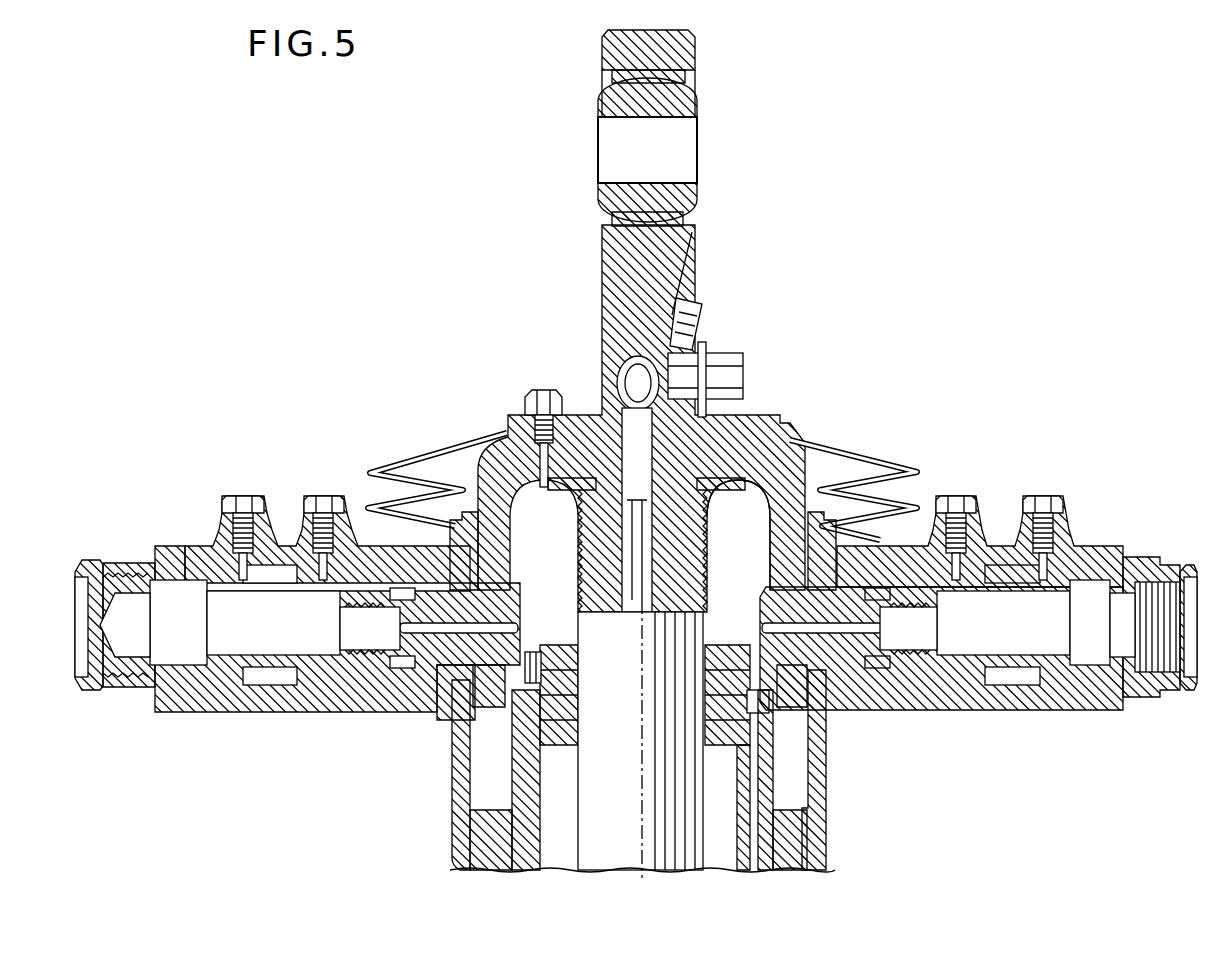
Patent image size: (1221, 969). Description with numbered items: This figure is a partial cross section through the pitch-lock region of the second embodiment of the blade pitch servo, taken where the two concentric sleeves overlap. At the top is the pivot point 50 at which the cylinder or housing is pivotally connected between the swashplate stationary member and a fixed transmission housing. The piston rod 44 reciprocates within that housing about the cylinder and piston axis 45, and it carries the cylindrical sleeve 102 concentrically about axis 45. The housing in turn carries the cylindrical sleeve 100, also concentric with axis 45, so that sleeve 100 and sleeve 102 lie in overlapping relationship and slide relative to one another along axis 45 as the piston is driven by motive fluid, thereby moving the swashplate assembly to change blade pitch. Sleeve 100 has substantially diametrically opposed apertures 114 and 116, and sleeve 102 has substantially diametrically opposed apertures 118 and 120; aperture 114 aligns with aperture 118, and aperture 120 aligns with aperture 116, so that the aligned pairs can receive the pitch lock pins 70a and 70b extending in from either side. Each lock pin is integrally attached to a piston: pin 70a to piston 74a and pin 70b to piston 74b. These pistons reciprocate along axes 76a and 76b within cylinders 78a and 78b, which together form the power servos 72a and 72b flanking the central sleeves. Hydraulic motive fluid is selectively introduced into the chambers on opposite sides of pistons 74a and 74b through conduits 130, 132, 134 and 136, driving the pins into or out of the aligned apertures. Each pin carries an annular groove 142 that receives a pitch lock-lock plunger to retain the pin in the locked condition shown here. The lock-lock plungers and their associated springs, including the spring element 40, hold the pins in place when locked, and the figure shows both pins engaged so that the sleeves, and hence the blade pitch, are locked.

The pivot point 50 is at (702, 96).
The spring 40 is at (868, 438).
The cylindrical sleeve 102 is at (499, 533).
The aperture 118 is at (768, 590).
The conduit 134 is at (325, 575).
The conduit 132 is at (928, 585).
The power servo 72b is at (188, 538).
The power servo 72a is at (1110, 543).
The conduit 136 is at (278, 545).
The conduit 130 is at (1045, 560).
The pitch lock pin 70b is at (397, 705).
The pitch lock pin 70a is at (952, 712).
The piston 74b is at (303, 703).
The piston 74a is at (1003, 710).
The cylinder 78b is at (203, 707).
The cylinder 78a is at (1098, 713).
The axis 76b is at (292, 636).
The axis 76a is at (1024, 643).
The annular groove 142 is at (402, 590).
The aperture 116 is at (432, 706).
The aperture 120 is at (478, 728).
The aperture 114 is at (842, 715).
The piston rod 44 is at (512, 824).
The cylindrical sleeve 100 is at (816, 774).
The cylinder and piston axis 45 is at (640, 790).